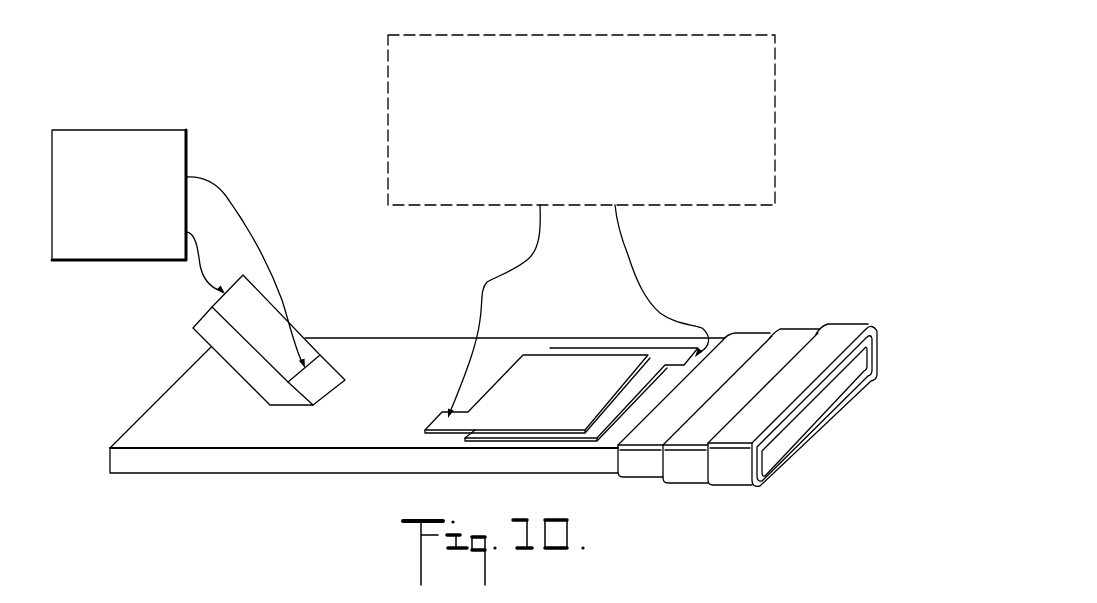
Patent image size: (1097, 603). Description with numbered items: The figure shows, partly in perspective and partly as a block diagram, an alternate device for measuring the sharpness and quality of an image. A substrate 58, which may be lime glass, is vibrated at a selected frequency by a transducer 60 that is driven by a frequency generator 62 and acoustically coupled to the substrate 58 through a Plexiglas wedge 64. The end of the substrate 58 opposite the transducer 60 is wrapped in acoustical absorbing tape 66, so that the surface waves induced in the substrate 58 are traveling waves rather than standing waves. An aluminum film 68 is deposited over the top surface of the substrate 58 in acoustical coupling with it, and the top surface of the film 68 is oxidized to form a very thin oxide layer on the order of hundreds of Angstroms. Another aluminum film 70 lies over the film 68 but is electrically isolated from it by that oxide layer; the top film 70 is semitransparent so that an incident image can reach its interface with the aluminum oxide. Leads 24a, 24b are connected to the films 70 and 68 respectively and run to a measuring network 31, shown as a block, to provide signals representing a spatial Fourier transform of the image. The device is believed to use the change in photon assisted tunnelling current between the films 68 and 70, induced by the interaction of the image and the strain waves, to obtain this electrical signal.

The measuring network 31 is at (776, 178).
The frequency generator 62 is at (152, 131).
The transducer 60 is at (210, 316).
The Plexiglas wedge 64 is at (278, 397).
The substrate 58 is at (174, 481).
The aluminum film 68 is at (691, 342).
The semitransparent aluminum film 70 is at (611, 349).
The lead 24a is at (487, 282).
The lead 24b is at (628, 252).
The acoustical absorbing tape 66 is at (719, 492).